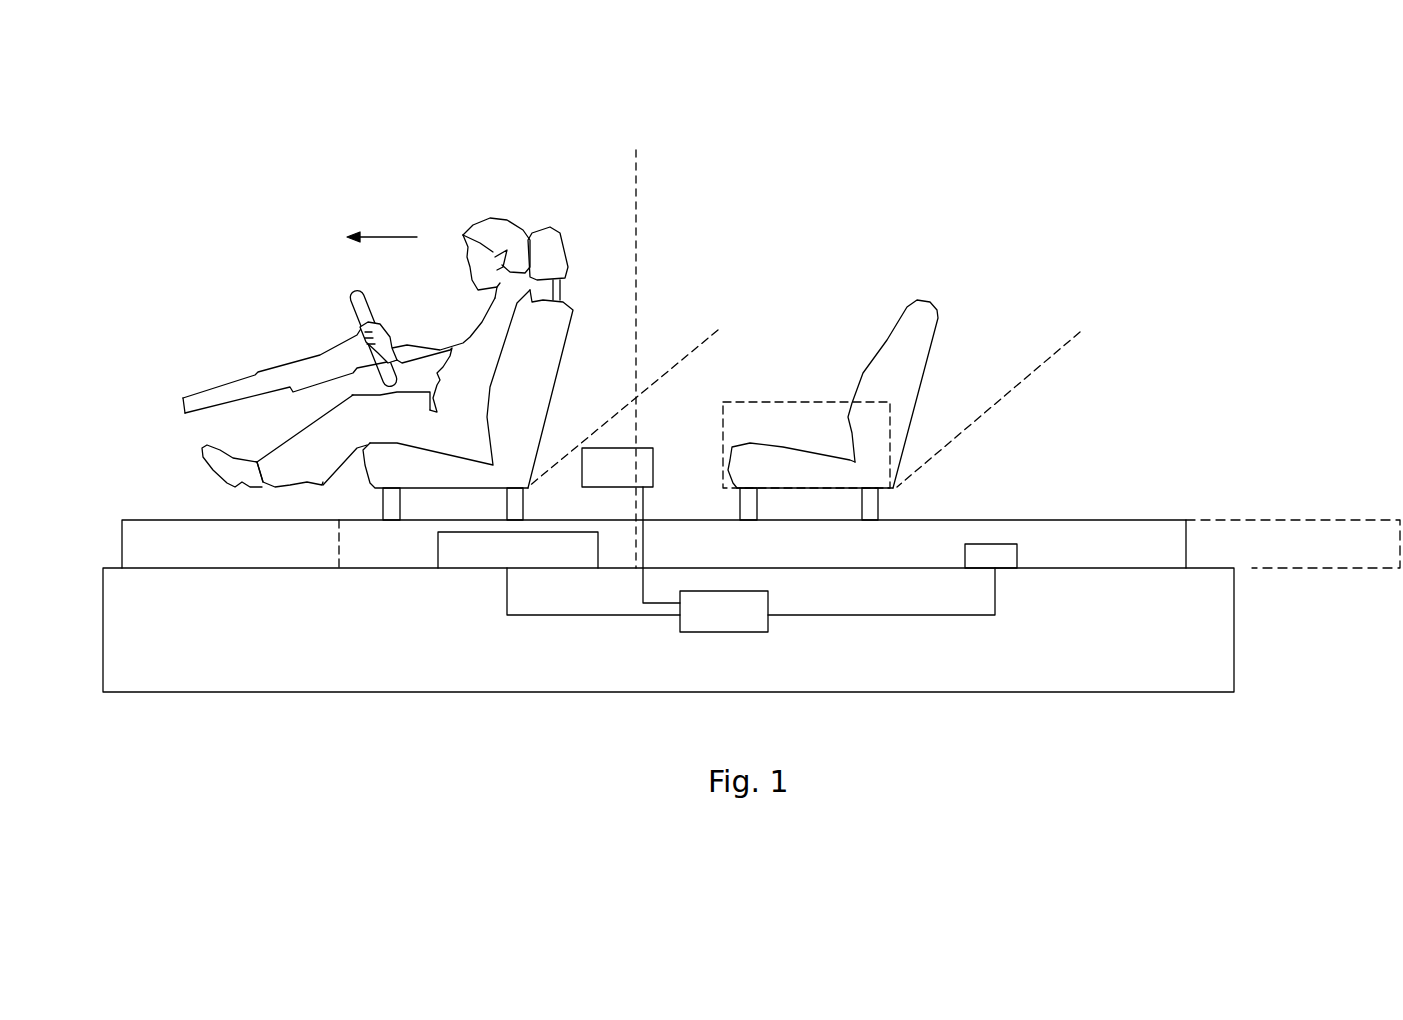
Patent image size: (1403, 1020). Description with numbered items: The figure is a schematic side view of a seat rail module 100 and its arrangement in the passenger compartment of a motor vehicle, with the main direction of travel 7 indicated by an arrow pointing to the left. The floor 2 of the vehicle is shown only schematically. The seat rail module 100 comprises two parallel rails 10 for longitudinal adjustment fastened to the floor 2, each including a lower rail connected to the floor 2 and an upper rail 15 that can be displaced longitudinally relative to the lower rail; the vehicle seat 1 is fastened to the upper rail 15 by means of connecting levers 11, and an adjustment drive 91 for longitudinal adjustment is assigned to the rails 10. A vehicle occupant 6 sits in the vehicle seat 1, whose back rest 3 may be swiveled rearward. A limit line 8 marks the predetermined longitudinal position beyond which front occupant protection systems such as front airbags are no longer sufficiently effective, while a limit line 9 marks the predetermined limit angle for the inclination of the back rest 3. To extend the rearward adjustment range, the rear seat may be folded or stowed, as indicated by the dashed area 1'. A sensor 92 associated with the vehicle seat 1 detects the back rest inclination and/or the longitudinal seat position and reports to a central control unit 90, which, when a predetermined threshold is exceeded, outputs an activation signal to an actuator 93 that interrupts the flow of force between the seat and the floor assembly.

The seat rail module 100 is at (196, 121).
The vehicle seat 1 is at (494, 389).
The stowed position of vehicle seat 1' is at (808, 410).
The floor 2 is at (1222, 657).
The back rest 3 is at (568, 308).
The vehicle occupant 6 is at (500, 223).
The direction of travel 7 is at (385, 232).
The limit line 8 is at (637, 182).
The limit line for back rest inclination 9 is at (708, 338).
The rails for longitudinal adjustment 10 is at (153, 528).
The connecting levers 11 is at (393, 506).
The upper rail 15 is at (1302, 530).
The central control unit 90 is at (751, 624).
The adjustment drive 91 is at (472, 563).
The sensor 92 is at (643, 470).
The actuator 93 is at (1004, 560).